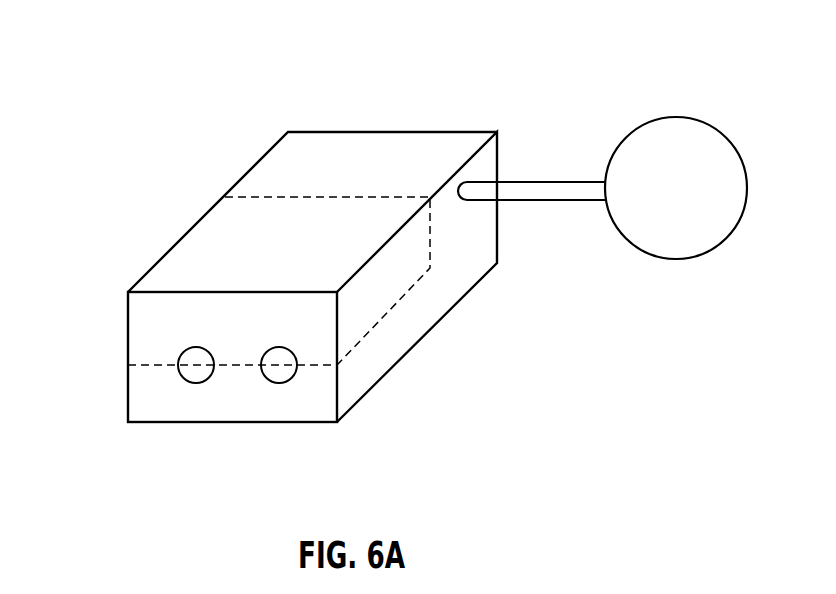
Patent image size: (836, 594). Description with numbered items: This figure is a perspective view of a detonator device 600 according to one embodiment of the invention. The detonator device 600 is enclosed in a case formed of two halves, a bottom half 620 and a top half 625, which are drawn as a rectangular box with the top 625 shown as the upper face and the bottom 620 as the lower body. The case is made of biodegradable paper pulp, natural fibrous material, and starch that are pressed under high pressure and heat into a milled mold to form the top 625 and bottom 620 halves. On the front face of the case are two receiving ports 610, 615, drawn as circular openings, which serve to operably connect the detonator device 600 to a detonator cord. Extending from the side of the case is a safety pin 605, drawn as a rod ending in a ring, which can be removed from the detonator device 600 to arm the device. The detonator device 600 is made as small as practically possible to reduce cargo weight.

The detonator device 600 is at (570, 53).
The safety pin 605 is at (508, 180).
The receiving port 610 is at (292, 372).
The receiving port 615 is at (180, 372).
The bottom half of case 620 is at (238, 125).
The top half of case 625 is at (207, 230).